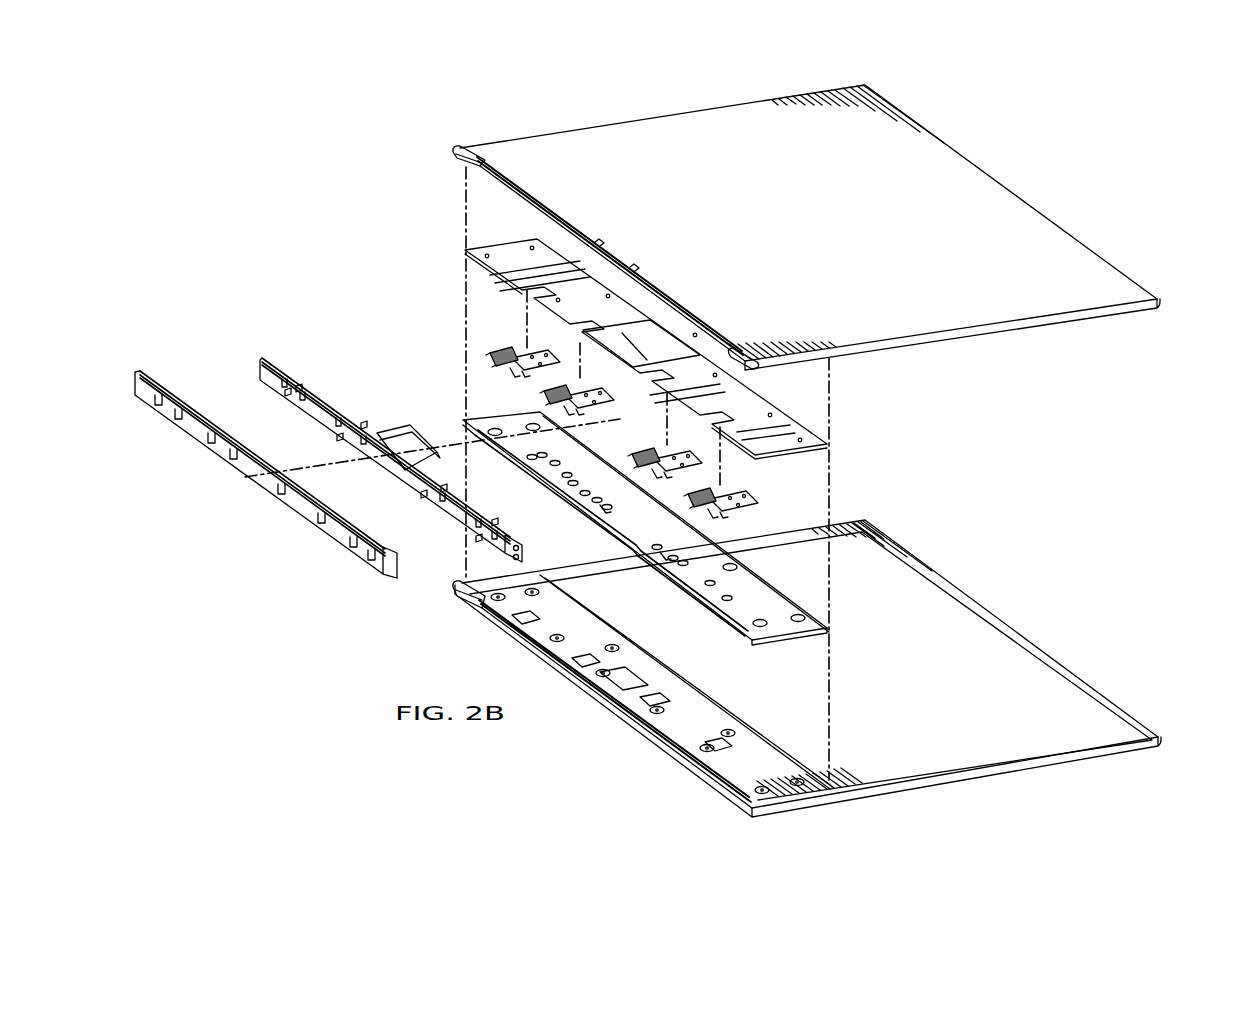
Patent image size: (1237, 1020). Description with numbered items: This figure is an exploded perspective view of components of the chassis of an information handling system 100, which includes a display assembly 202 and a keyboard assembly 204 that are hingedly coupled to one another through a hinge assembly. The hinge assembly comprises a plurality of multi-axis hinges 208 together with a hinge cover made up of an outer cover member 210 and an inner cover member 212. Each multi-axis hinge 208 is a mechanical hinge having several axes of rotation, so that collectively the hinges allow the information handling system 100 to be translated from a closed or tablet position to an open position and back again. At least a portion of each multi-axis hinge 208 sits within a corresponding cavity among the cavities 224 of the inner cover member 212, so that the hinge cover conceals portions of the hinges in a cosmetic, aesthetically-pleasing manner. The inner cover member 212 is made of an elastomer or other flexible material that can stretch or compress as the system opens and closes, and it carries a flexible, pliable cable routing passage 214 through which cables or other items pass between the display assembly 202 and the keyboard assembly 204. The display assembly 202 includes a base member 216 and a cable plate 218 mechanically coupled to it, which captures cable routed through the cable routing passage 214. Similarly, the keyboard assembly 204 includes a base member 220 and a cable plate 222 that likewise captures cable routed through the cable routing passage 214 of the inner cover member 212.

The information handling system 100 is at (279, 135).
The display assembly 202 is at (441, 148).
The keyboard assembly 204 is at (1164, 622).
The multi-axis hinge 208 is at (512, 350).
The outer cover member 210 is at (226, 470).
The inner cover member 212 is at (262, 362).
The cable routing passage 214 is at (403, 429).
The base member 216 is at (1010, 188).
The cable plate 218 is at (796, 417).
The base member 220 is at (965, 777).
The cable plate 222 is at (780, 640).
The cavities 224 is at (298, 386).